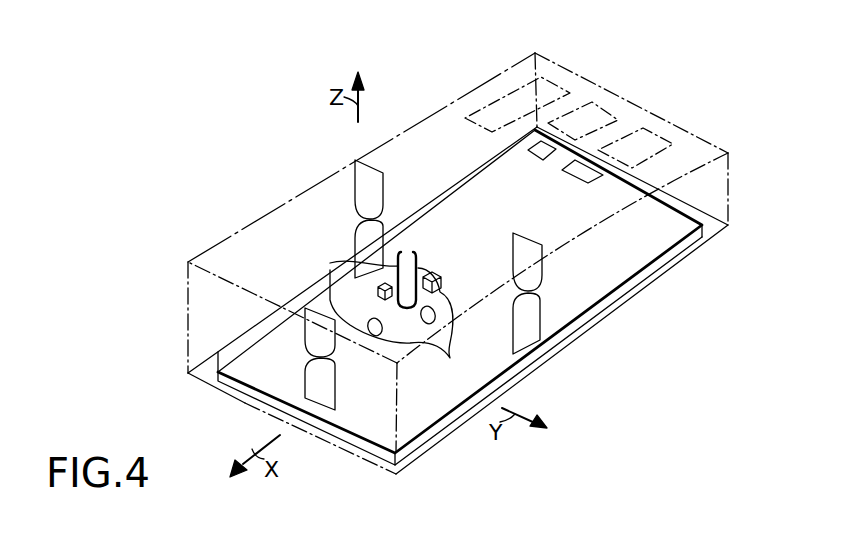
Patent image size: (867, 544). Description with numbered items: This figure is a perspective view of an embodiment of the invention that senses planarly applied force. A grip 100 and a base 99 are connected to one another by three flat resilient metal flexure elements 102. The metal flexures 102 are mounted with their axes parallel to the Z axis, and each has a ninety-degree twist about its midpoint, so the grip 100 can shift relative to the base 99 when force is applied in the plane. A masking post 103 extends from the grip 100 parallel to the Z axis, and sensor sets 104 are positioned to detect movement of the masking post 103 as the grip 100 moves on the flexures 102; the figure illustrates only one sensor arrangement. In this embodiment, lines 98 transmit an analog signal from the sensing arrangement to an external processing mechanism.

The lines 98 is at (309, 184).
The base 99 is at (242, 366).
The grip 100 is at (702, 143).
The flat resilient metal flexure elements 102 is at (533, 322).
The masking post 103 is at (354, 264).
The sensor sets 104 is at (448, 348).